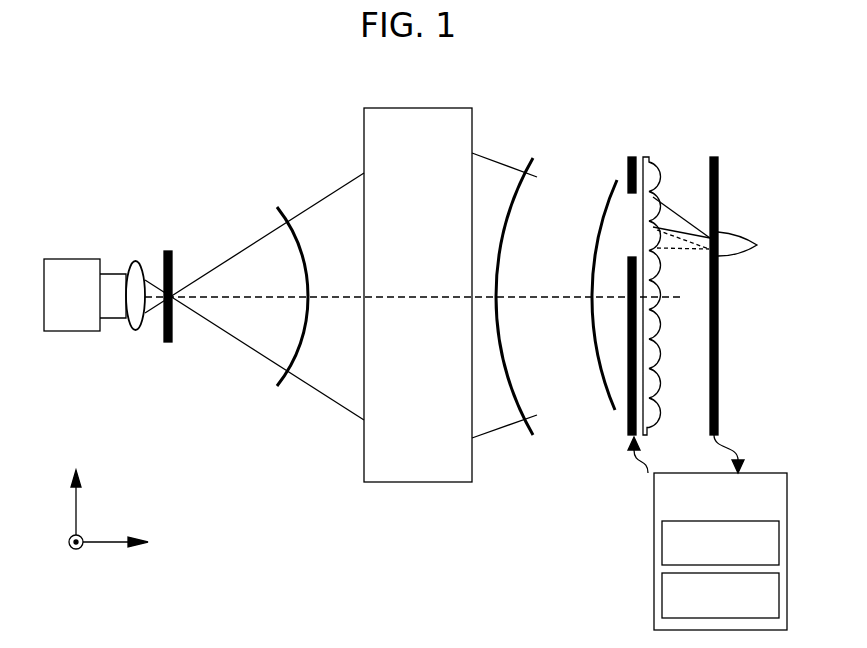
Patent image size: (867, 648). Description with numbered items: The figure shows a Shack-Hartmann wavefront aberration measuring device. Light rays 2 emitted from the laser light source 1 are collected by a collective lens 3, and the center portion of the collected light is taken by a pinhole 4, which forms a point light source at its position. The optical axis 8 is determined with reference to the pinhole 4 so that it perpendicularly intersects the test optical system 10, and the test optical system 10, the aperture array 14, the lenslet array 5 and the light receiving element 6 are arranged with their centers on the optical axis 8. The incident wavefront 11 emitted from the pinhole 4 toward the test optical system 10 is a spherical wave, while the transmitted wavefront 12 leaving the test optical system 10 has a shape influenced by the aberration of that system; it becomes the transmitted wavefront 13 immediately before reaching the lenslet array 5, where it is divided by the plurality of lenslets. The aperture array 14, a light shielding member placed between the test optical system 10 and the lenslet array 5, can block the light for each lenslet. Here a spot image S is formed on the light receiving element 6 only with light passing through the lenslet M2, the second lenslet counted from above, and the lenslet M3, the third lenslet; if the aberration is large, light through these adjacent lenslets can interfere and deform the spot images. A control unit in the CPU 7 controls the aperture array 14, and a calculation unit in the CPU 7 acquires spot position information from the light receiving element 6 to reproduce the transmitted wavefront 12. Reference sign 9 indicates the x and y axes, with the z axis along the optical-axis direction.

The light source 1 is at (70, 262).
The light rays 2 is at (113, 280).
The collective lens 3 is at (138, 262).
The pinhole 4 is at (164, 305).
The lenslet array 5 is at (645, 157).
The light receiving element 6 is at (718, 342).
The central processing unit 7 is at (660, 500).
The optical axis 8 is at (230, 298).
The coordinate axes 9 is at (120, 493).
The test optical system 10 is at (421, 112).
The incident wavefront 11 is at (287, 222).
The transmitted wavefront 12 is at (524, 152).
The transmitted wavefront 13 is at (608, 392).
The aperture array 14 is at (632, 157).
The lenslet M2 is at (653, 200).
The lenslet M3 is at (650, 237).
The spot image S is at (748, 235).